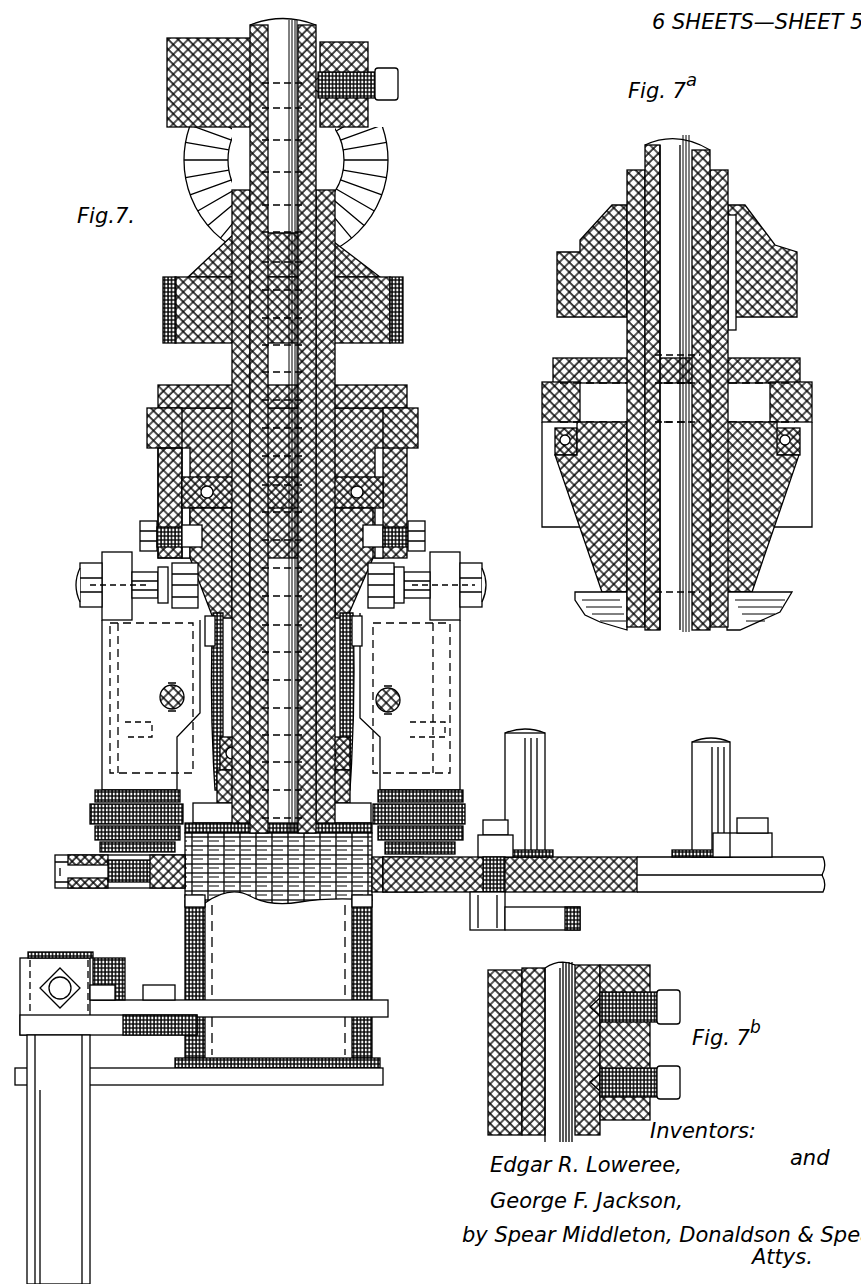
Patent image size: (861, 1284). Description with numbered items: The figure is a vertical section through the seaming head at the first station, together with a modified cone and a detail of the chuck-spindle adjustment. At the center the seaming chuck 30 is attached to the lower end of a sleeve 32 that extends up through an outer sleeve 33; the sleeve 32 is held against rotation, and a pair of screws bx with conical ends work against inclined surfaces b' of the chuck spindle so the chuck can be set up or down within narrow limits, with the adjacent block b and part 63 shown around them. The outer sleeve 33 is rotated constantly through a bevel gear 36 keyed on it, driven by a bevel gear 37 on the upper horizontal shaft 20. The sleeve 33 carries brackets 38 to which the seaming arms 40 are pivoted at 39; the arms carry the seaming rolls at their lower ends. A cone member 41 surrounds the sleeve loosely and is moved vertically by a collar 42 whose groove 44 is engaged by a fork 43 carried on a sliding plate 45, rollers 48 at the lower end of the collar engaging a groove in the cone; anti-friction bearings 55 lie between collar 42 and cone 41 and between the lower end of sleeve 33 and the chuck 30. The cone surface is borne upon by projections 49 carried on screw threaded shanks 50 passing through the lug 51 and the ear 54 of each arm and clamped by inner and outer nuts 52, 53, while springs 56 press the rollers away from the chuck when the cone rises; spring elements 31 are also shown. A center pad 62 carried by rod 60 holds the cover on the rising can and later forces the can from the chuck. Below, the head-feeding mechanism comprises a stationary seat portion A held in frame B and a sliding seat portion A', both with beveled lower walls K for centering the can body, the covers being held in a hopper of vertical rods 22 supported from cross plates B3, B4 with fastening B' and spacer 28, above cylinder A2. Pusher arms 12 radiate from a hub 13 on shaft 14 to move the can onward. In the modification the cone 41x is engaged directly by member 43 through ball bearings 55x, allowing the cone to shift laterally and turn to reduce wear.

In FIG. 7, the upper horizontal shaft 20 is at (322, 150).
In FIG. 7, the upper bearing block b is at (209, 82).
In FIG. 7, the inclined surfaces of the chuck spindle b' is at (379, 84).
In FIG. 7, the screws bx is at (384, 76).
In FIG. 7, the bevel gear 37 is at (215, 225).
In FIG. 7, the bevel gear 36 is at (185, 273).
In FIG. 7, the ring end cap 63 is at (166, 325).
In FIG. 7, the groove 44 is at (408, 408).
In FIG. 7, the yoke or collar 42 is at (388, 385).
In FIG. 7, the fork 43 is at (150, 425).
In FIG. 7, the sliding plate 45 is at (158, 470).
In FIG. 7, the anti-friction bearings 55 is at (385, 478).
In FIG. 7, the cone member 41 is at (352, 600).
In FIG. 7, the projections or rollers 48 is at (178, 530).
In FIG. 7, the seaming arms 40 is at (132, 677).
In FIG. 7, the lug of the seaming arm 51 is at (117, 553).
In FIG. 7, the inner nut 52 is at (95, 600).
In FIG. 7, the screw threaded shank 50 is at (80, 575).
In FIG. 7, the outer nut 53 is at (135, 605).
In FIG. 7, the ear or lug 54 is at (162, 612).
In FIG. 7, the projections 49 is at (187, 590).
In FIG. 7, the pivot 39 is at (160, 697).
In FIG. 7, the springs 56 is at (216, 678).
In FIG. 7, the arms or brackets 38 is at (190, 745).
In FIG. 7, the spring stack 31 is at (92, 818).
In FIG. 7, the center pad 62 is at (292, 833).
In FIG. 7, the seaming chuck 30 is at (332, 840).
In FIG. 7, the cylinder A2 is at (335, 900).
In FIG. 7, the flared or beveled lower wall K is at (183, 897).
In FIG. 7, the pusher arms 12 is at (390, 1008).
In FIG. 7, the partial seat portion A is at (120, 887).
In FIG. 7, the hub or disk 13 is at (50, 963).
In FIG. 7, the shaft 14 is at (88, 953).
In FIG. 7, the spacer block 28 is at (428, 895).
In FIG. 7, the seat portion and feed slide A' is at (419, 908).
In FIG. 7, the plate or frame B is at (604, 892).
In FIG. 7, the vertical rods 22 is at (545, 752).
In FIG. 7, the bolt B' is at (519, 855).
In FIG. 7, the cross plate B3 is at (508, 866).
In FIG. 7, the cross plate B4 is at (738, 860).
In FIG. 7, the outer sleeve 33 is at (336, 680).
In FIG. 7, the rod 60 is at (298, 347).
In FIG. 7, the sleeve 32 is at (305, 668).
In FIG. 7a, the ball bearings 55x is at (556, 440).
In FIG. 7a, the cone member 41x is at (582, 462).